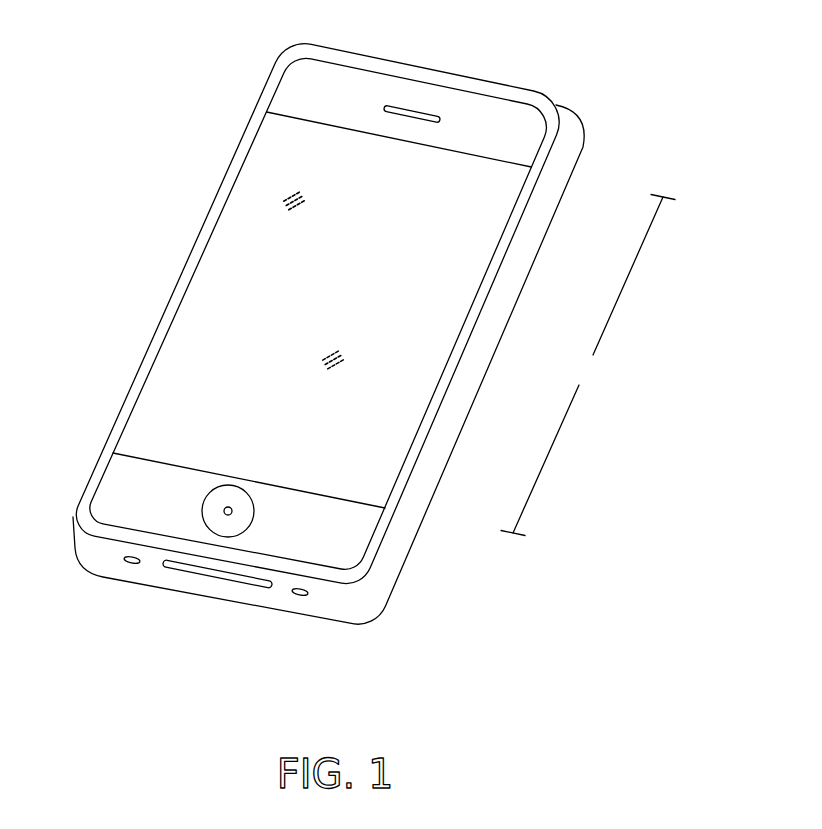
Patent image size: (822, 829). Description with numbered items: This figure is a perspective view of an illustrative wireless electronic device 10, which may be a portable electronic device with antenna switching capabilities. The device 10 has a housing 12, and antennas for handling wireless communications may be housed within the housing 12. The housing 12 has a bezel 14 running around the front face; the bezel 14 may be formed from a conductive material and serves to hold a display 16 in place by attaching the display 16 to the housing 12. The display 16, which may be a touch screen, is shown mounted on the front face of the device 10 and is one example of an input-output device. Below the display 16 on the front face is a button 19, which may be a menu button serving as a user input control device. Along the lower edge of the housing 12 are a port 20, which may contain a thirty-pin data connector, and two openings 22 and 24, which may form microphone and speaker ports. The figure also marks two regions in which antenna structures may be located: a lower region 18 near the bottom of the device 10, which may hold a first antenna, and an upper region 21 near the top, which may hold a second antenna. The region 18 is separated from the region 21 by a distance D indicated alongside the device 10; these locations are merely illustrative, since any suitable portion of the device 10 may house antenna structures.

The electronic device 10 is at (613, 57).
The housing 12 is at (438, 458).
The bezel 14 is at (193, 245).
The display 16 is at (500, 193).
The region 18 is at (211, 480).
The button 19 is at (223, 537).
The port 20 is at (245, 588).
The region 21 is at (453, 147).
The opening 22 is at (131, 566).
The opening 24 is at (299, 598).